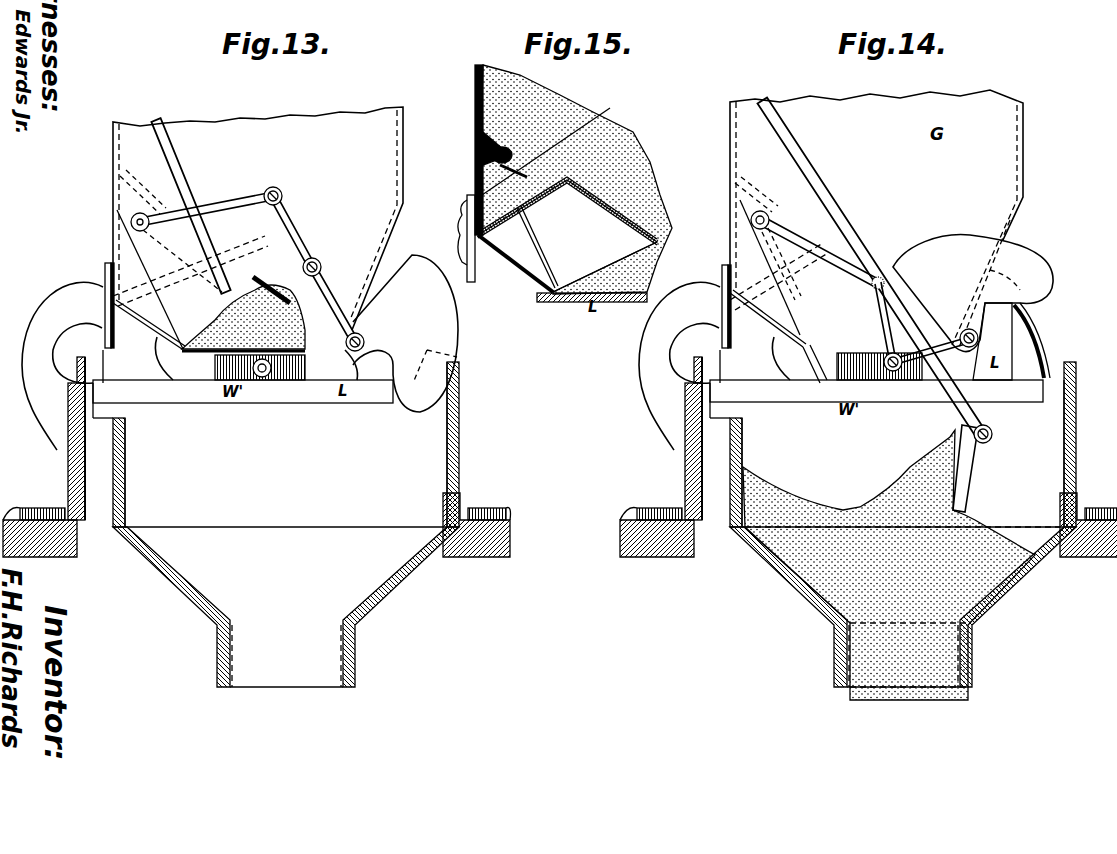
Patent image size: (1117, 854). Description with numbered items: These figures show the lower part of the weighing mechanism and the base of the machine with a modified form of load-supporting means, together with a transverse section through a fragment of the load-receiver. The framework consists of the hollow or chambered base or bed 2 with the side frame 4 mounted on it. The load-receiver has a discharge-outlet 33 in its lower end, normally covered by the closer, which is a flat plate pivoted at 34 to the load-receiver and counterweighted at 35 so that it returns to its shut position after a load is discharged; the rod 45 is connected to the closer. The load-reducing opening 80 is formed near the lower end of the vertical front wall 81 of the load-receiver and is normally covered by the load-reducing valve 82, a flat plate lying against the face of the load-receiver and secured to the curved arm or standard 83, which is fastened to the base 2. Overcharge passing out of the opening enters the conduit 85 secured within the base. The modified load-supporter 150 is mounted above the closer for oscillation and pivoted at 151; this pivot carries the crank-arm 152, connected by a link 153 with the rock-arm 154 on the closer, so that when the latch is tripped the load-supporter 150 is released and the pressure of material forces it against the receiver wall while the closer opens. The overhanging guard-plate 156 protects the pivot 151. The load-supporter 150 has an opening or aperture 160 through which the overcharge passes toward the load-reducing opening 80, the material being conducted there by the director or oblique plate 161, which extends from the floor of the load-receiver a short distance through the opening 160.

In FIG. 13, the hollow or chambered base or bed 2 is at (447, 452).
In FIG. 14, the hollow or chambered base or bed 2 is at (1066, 434).
In FIG. 13, the side frame 4 is at (158, 362).
In FIG. 14, the side frame 4 is at (1022, 336).
In FIG. 13, the discharge-outlet 33 is at (190, 351).
In FIG. 15, the discharge-outlet 33 is at (555, 290).
In FIG. 14, the discharge-outlet 33 is at (815, 364).
In FIG. 13, the closer pivot 34 is at (364, 338).
In FIG. 14, the closer pivot 34 is at (980, 338).
In FIG. 13, the counterweight 35 is at (447, 368).
In FIG. 14, the counterweight 35 is at (968, 245).
In FIG. 13, the rod 45 is at (182, 172).
In FIG. 14, the rod 45 is at (800, 152).
In FIG. 13, the load-reducing opening 80 is at (118, 258).
In FIG. 14, the load-reducing opening 80 is at (728, 262).
In FIG. 13, the vertical front wall 81 is at (113, 213).
In FIG. 15, the vertical front wall 81 is at (475, 93).
In FIG. 14, the vertical front wall 81 is at (730, 198).
In FIG. 13, the load-reducing valve 82 is at (105, 275).
In FIG. 15, the load-reducing valve 82 is at (467, 210).
In FIG. 14, the load-reducing valve 82 is at (722, 277).
In FIG. 13, the curved arm or standard 83 is at (55, 318).
In FIG. 15, the curved arm or standard 83 is at (460, 235).
In FIG. 14, the curved arm or standard 83 is at (650, 345).
In FIG. 13, the conduit 85 is at (125, 470).
In FIG. 14, the conduit 85 is at (742, 450).
In FIG. 13, the load-supporter 150 is at (262, 293).
In FIG. 15, the load-supporter 150 is at (614, 215).
In FIG. 14, the load-supporter 150 is at (815, 372).
In FIG. 13, the pivot 151 is at (143, 213).
In FIG. 15, the pivot 151 is at (476, 150).
In FIG. 14, the pivot 151 is at (767, 215).
In FIG. 13, the crank-arm 152 is at (220, 205).
In FIG. 14, the crank-arm 152 is at (868, 268).
In FIG. 13, the link 153 is at (293, 232).
In FIG. 14, the link 153 is at (880, 310).
In FIG. 13, the rock-arm 154 is at (330, 290).
In FIG. 14, the rock-arm 154 is at (905, 365).
In FIG. 13, the overhanging guard-plate 156 is at (125, 190).
In FIG. 15, the overhanging guard-plate 156 is at (493, 127).
In FIG. 14, the overhanging guard-plate 156 is at (752, 198).
In FIG. 15, the opening or aperture 160 is at (565, 147).
In FIG. 13, the director or oblique plate 161 is at (178, 262).
In FIG. 15, the director or oblique plate 161 is at (540, 205).
In FIG. 14, the director or oblique plate 161 is at (779, 276).